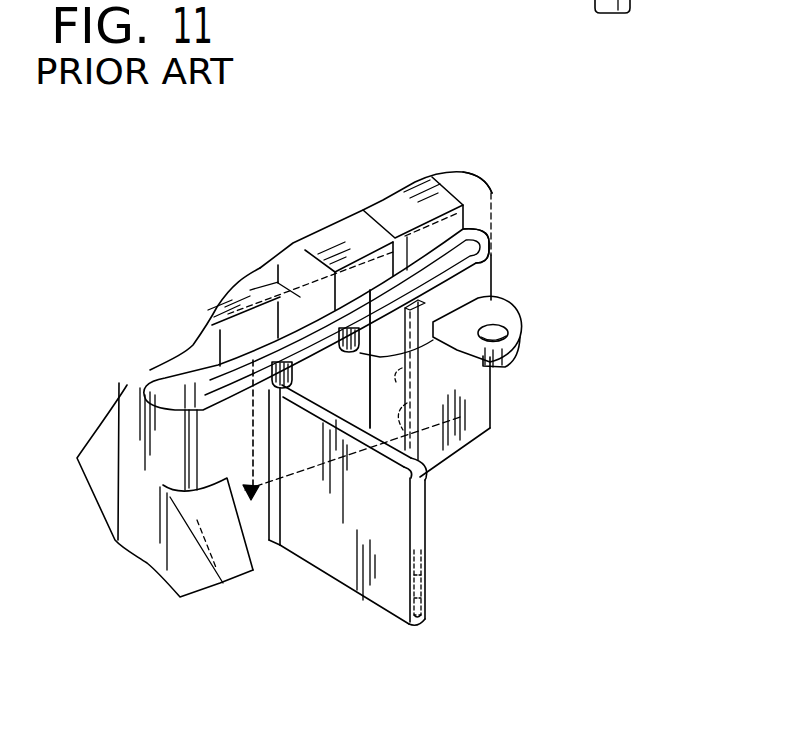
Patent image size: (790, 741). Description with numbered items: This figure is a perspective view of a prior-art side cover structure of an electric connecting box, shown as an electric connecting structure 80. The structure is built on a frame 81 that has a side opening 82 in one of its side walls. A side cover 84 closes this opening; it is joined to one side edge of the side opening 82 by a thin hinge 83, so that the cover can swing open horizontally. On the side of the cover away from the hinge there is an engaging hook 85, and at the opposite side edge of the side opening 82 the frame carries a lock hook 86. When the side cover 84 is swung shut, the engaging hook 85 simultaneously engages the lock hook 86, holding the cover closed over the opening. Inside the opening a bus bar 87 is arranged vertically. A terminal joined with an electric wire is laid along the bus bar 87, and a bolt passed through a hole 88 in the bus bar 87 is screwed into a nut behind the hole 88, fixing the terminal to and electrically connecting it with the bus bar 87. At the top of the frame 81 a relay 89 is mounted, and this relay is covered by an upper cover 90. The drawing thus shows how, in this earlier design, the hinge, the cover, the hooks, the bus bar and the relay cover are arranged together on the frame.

The electric connecting structure 80 is at (176, 177).
The frame 81 is at (443, 414).
The side opening 82 is at (415, 461).
The thin hinge 83 is at (272, 515).
The side cover 84 is at (383, 583).
The engaging hook 85 is at (425, 593).
The lock hook 86 is at (393, 380).
The bus bar 87 is at (491, 313).
The hole 88 is at (490, 246).
The relay 89 is at (405, 210).
The upper cover 90 is at (483, 180).